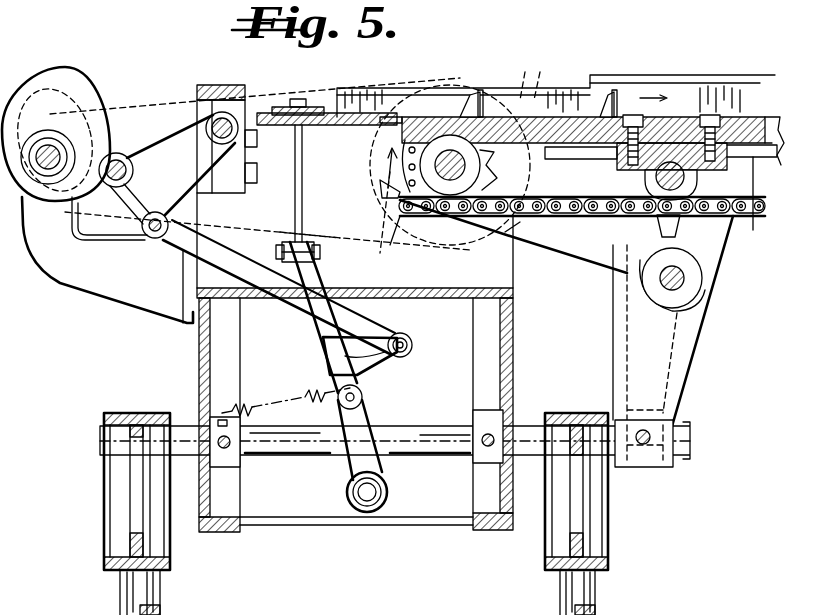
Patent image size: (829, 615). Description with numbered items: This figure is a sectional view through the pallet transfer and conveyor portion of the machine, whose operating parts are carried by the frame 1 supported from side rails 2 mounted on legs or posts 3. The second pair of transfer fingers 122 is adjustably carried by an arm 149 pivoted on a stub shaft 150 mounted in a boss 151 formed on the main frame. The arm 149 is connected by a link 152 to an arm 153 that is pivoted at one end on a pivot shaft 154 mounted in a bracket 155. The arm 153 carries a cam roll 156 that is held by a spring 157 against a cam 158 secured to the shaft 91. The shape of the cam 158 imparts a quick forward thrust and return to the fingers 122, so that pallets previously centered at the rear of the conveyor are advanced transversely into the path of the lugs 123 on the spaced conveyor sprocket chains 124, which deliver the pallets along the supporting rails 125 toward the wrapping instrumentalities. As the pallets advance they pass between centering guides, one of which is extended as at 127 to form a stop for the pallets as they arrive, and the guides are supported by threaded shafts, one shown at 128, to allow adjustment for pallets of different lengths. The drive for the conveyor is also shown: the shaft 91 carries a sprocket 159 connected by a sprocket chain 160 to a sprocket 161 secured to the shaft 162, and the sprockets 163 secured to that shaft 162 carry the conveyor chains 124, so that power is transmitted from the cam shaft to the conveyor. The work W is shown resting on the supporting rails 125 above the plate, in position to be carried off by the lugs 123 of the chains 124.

The frame 1 is at (457, 522).
The side rails 2 is at (112, 522).
The legs or posts 3 is at (150, 594).
The shaft 91 is at (48, 150).
The transfer fingers 122 is at (316, 160).
The lugs 123 is at (481, 110).
The conveyor sprocket chains 124 is at (748, 225).
The supporting rails 125 is at (742, 112).
The extension of centering guide 127 is at (362, 90).
The threaded shaft 128 is at (677, 283).
The arm 149 is at (330, 345).
The stub shaft 150 is at (365, 500).
The boss 151 is at (388, 498).
The link 152 is at (227, 258).
The arm 153 is at (173, 145).
The pivot shaft 154 is at (212, 120).
The bracket 155 is at (222, 85).
The cam roll 156 is at (120, 153).
The spring 157 is at (299, 401).
The cam 158 is at (83, 82).
The sprocket 159 is at (87, 133).
The sprocket chain 160 is at (318, 222).
The sprocket 161 is at (375, 180).
The shaft 162 is at (456, 182).
The sprockets 163 is at (493, 180).
The workpiece W is at (603, 75).